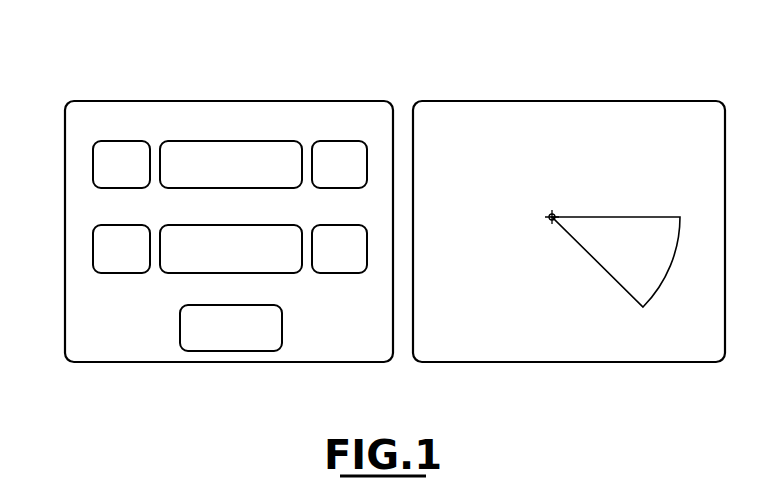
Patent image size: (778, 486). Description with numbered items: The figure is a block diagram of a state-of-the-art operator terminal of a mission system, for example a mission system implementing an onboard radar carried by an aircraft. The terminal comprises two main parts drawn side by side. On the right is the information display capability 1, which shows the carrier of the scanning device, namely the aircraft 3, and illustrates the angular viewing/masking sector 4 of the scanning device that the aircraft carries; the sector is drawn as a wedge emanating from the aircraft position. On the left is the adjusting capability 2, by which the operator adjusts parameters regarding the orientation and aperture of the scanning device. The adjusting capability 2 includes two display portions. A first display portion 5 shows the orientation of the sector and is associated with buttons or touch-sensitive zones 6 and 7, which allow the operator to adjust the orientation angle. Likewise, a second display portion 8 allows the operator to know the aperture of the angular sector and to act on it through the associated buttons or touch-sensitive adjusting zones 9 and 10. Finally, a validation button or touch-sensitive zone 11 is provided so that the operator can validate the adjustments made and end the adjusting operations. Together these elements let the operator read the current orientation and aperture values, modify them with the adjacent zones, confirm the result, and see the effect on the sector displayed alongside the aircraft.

The information display capability 1 is at (634, 88).
The adjusting capability 2 is at (85, 92).
The aircraft 3 is at (551, 195).
The angular viewing/masking sector 4 is at (677, 269).
The first display portion 5 is at (273, 133).
The button or touch-sensitive zone 6 is at (347, 133).
The button or touch-sensitive zone 7 is at (131, 133).
The second display portion 8 is at (176, 278).
The button or touch-sensitive adjusting zone 9 is at (336, 221).
The button or touch-sensitive adjusting zone 10 is at (90, 250).
The validation button or touch-sensitive zone 11 is at (292, 327).